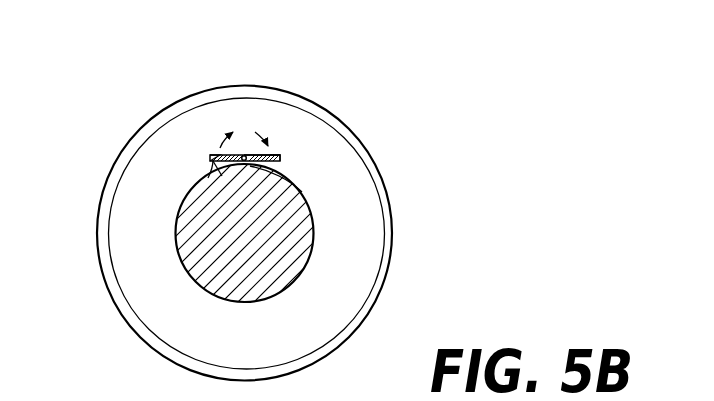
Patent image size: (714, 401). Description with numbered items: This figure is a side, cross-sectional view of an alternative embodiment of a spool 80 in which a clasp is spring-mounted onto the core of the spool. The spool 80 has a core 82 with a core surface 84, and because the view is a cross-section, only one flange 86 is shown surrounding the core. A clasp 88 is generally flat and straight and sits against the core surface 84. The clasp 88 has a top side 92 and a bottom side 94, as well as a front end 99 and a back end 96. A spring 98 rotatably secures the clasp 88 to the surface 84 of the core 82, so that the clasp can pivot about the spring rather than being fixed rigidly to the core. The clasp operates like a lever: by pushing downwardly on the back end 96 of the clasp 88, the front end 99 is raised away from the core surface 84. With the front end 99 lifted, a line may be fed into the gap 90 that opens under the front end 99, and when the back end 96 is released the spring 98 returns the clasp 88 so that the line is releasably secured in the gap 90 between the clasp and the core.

The spool 80 is at (396, 98).
The core 82 is at (294, 234).
The core surface 84 is at (302, 192).
The flange 86 is at (334, 272).
The clasp 88 is at (243, 155).
The gap 90 is at (222, 176).
The top side 92 is at (250, 154).
The bottom side 94 is at (208, 178).
The back end 96 is at (278, 156).
The spring 98 is at (248, 154).
The front end 99 is at (212, 157).